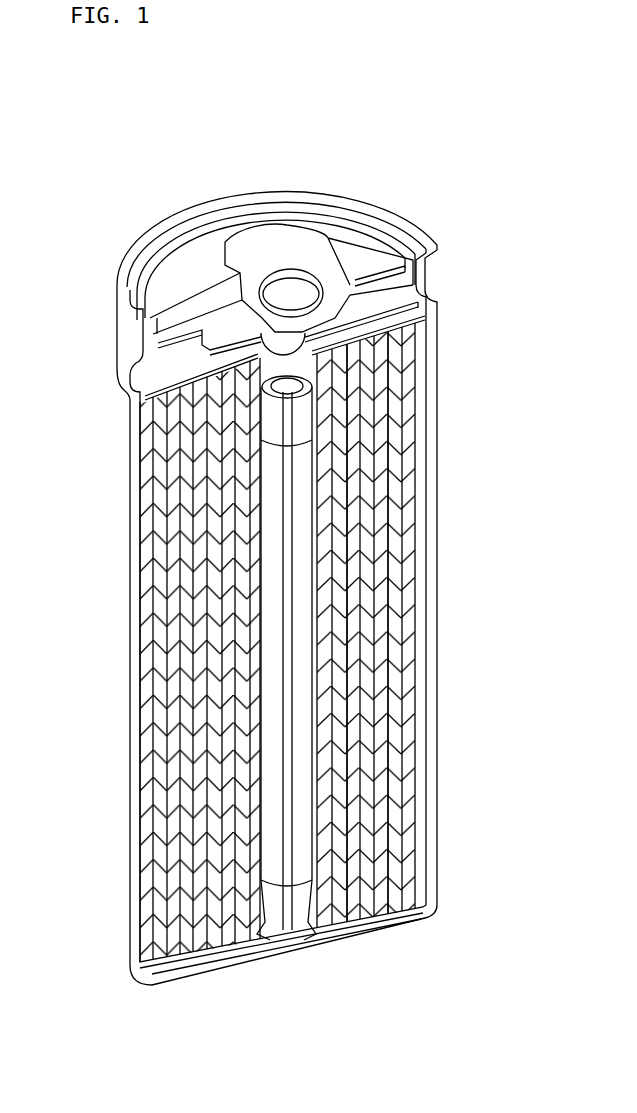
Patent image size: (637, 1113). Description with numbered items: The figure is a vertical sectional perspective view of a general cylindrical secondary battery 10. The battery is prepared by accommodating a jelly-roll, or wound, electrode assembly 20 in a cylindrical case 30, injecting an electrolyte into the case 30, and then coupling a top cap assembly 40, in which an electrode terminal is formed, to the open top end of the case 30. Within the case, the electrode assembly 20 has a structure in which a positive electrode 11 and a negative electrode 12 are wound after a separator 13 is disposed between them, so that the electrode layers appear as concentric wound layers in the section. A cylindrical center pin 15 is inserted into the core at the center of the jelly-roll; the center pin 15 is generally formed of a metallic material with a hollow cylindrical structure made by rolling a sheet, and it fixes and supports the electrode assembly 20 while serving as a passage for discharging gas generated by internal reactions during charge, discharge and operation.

The cylindrical battery 10 is at (57, 117).
The positive electrode 11 is at (388, 908).
The negative electrode 12 is at (383, 897).
The separator 13 is at (345, 900).
The center pin 15 is at (262, 647).
The electrode assembly 20 is at (485, 993).
The cylindrical case 30 is at (437, 607).
The top cap assembly 40 is at (460, 235).